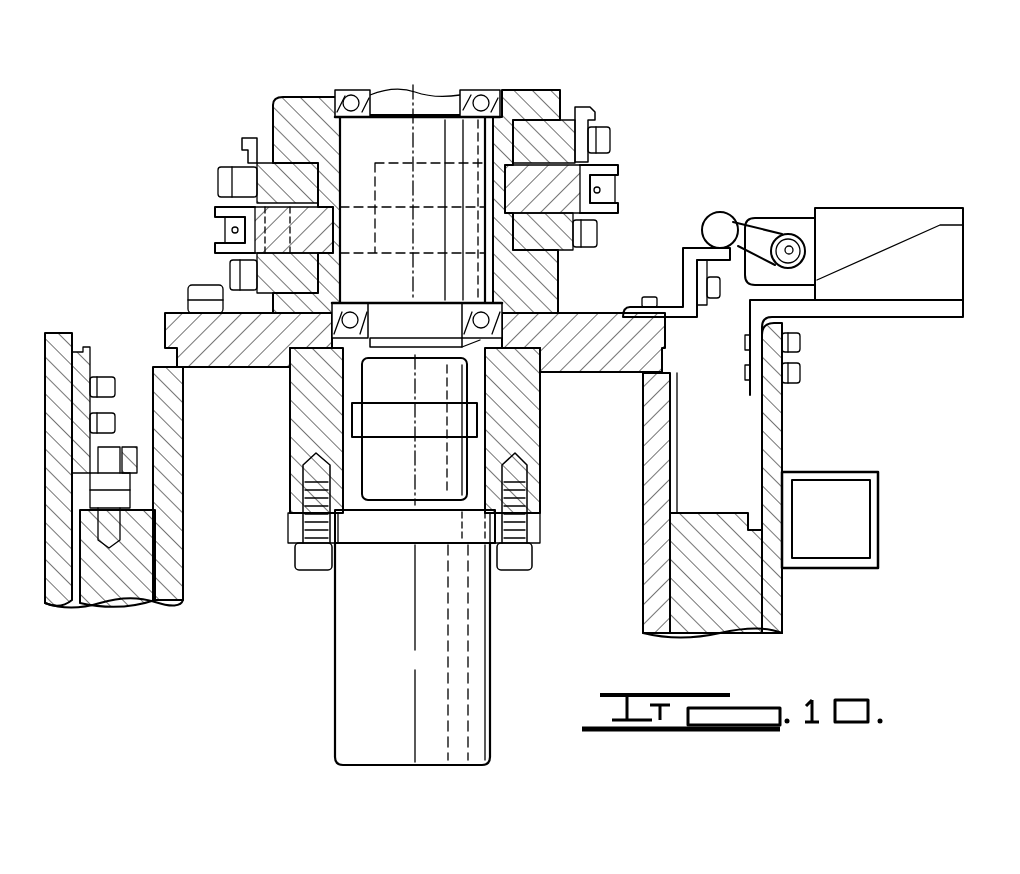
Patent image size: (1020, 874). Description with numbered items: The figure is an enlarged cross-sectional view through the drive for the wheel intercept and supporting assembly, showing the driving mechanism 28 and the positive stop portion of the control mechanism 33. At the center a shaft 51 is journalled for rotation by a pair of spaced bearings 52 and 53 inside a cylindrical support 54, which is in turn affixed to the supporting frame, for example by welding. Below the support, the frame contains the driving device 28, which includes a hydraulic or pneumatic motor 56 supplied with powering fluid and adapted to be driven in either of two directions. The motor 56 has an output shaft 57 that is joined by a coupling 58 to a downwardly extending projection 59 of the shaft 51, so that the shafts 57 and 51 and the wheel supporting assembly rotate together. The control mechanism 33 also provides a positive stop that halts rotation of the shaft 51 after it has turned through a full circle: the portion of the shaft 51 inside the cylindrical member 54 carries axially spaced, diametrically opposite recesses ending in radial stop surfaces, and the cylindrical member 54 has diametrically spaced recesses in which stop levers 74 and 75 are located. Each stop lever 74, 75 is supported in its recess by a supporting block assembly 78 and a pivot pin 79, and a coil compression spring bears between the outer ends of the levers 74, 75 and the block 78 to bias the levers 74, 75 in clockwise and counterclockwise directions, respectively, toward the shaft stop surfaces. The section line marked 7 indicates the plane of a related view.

The section line 7- 7 is at (208, 178).
The driving mechanism 28 is at (502, 658).
The control mechanism 33 is at (625, 115).
The shaft 51 is at (414, 97).
The bearing 52 is at (500, 96).
The bearing 53 is at (500, 310).
The cylindrical support 54 is at (565, 106).
The motor 56 is at (335, 703).
The output shaft 57 is at (402, 507).
The coupling 58 is at (470, 450).
The downwardly extending projection 59 is at (440, 358).
The stop lever 74 is at (594, 163).
The stop lever 75 is at (213, 207).
The supporting block assembly 78 is at (262, 162).
The pivot pin 79 is at (307, 97).